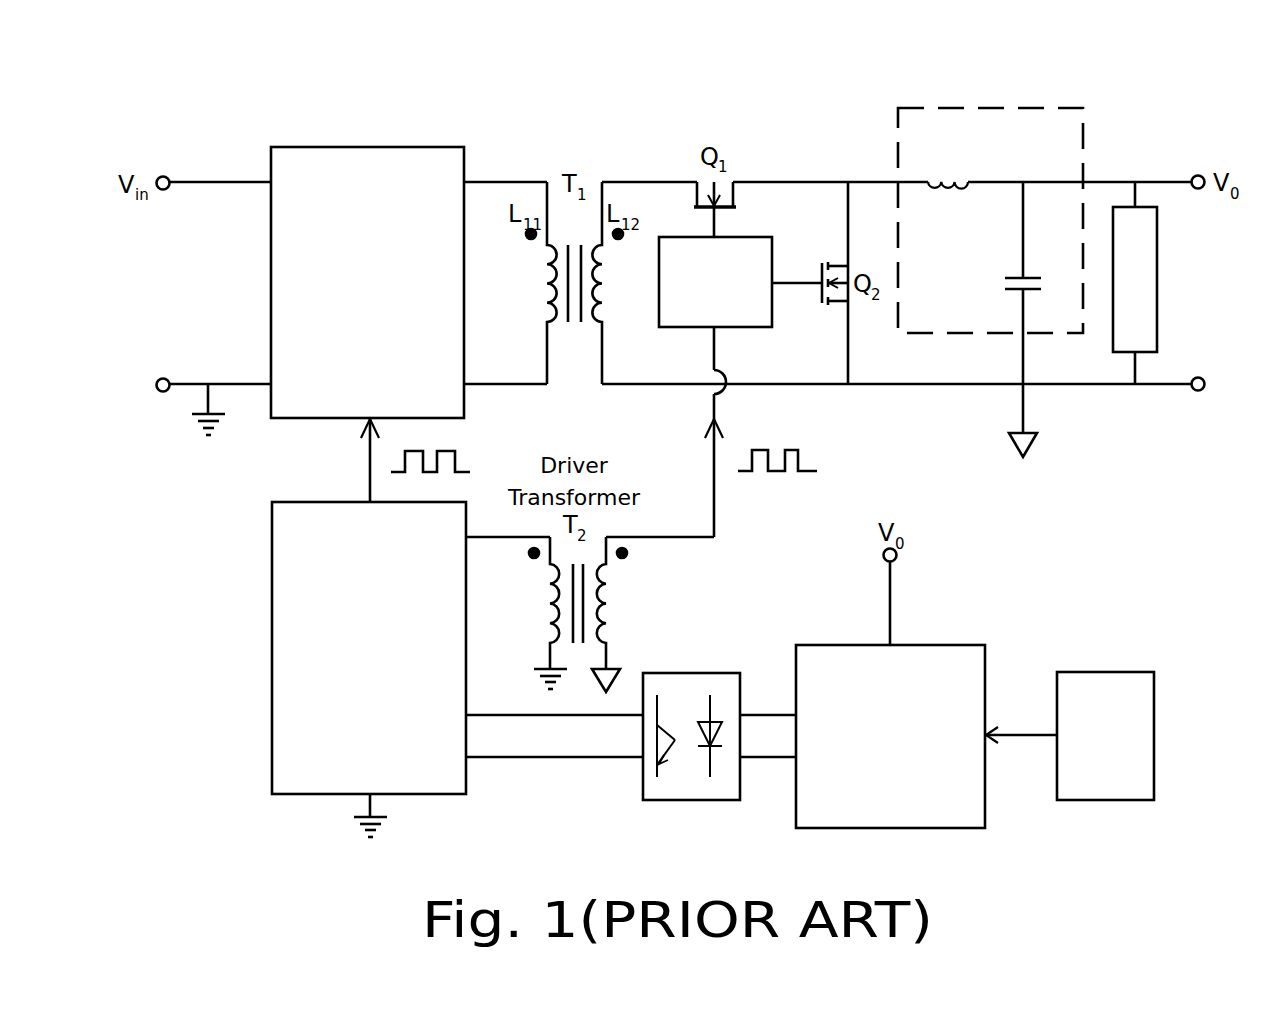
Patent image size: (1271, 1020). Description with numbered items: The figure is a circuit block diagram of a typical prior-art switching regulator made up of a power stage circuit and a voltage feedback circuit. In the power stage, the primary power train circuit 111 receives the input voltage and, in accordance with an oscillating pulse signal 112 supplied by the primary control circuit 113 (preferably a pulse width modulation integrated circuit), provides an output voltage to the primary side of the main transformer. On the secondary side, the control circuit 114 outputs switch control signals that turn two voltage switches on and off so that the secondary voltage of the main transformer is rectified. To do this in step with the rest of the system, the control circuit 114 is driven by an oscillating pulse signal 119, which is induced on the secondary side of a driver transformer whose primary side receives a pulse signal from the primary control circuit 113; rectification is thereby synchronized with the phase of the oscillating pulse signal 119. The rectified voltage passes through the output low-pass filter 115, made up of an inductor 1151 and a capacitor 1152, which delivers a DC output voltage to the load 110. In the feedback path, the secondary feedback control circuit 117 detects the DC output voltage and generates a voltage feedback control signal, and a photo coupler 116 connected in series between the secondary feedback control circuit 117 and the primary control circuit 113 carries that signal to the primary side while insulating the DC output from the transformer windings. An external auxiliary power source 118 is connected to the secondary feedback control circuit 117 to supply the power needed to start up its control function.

The load 110 is at (1145, 328).
The primary power train circuit 111 is at (404, 152).
The oscillating pulse signal 112 is at (458, 465).
The primary control circuit 113 is at (291, 557).
The control circuit 114 is at (738, 247).
The output low-pass filter 115 is at (1063, 137).
The inductor 1151 is at (955, 172).
The capacitor 1152 is at (1017, 275).
The photo coupler 116 is at (703, 683).
The secondary feedback control circuit 117 is at (967, 675).
The external auxiliary power source 118 is at (1135, 700).
The oscillating pulse signal 119 is at (800, 460).